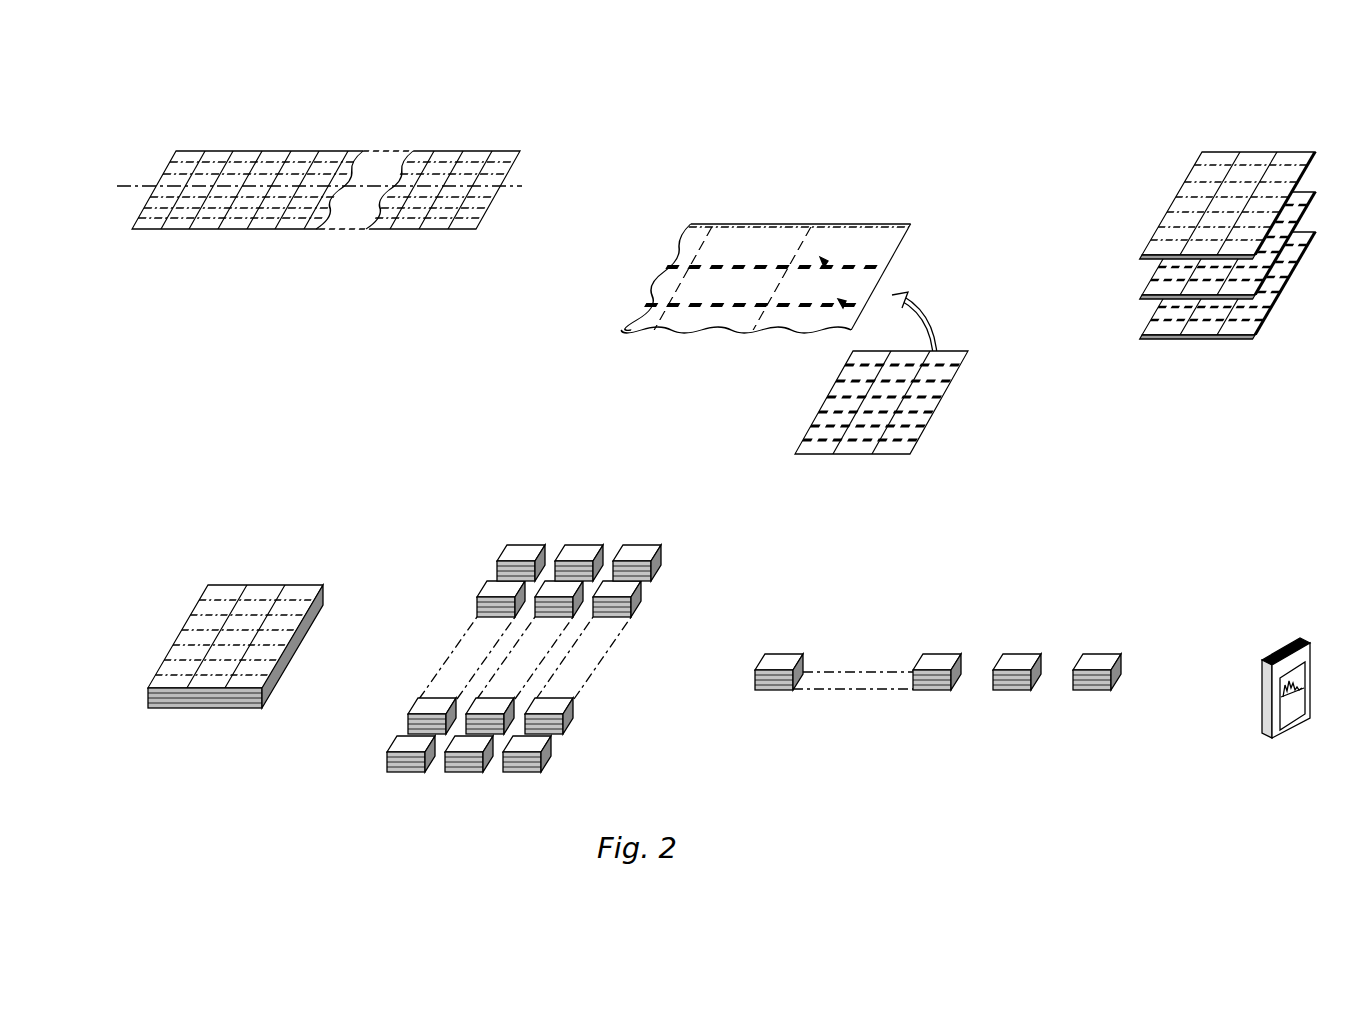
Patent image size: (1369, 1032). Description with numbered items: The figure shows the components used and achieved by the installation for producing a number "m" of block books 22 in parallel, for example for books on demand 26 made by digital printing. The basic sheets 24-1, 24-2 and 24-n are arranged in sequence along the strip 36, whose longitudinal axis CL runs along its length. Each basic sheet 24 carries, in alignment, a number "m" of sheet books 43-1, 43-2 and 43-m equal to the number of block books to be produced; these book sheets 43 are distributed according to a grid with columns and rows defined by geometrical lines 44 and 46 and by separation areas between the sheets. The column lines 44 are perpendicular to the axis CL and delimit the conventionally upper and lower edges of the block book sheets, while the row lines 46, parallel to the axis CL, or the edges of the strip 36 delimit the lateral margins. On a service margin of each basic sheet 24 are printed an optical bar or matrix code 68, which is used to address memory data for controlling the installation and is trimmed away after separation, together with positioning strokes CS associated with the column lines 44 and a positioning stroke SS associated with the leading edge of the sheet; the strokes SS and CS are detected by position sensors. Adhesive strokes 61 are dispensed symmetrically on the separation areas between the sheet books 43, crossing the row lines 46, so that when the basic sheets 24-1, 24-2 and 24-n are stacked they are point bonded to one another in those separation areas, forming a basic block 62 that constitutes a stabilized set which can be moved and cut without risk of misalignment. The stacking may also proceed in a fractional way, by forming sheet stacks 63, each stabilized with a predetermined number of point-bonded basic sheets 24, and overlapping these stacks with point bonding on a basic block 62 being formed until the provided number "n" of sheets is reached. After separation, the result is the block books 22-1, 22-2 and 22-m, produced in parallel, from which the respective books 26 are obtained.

The block book 22 is at (1297, 640).
The first block book 22-1 is at (402, 780).
The second block book 22-2 is at (407, 703).
The m-th block book 22-m is at (653, 541).
The basic sheet 24 is at (972, 426).
The first basic sheet 24-1 is at (200, 136).
The second basic sheet 24-2 is at (290, 135).
The n-th basic sheet 24-n is at (477, 140).
The book on demand 26 is at (1268, 638).
The strip 36 is at (340, 233).
The sheet book 43 is at (662, 330).
The first sheet book 43-1 is at (798, 447).
The second sheet book 43-2 is at (810, 433).
The m-th sheet book 43-m is at (950, 355).
The column line 44 is at (182, 222).
The row line 46 is at (158, 209).
The adhesive stroke 61 is at (840, 303).
The basic block 62 is at (178, 584).
The sheet stack 63 is at (1123, 203).
The matrix code 68 is at (895, 223).
The longitudinal axis CL is at (518, 186).
The positioning stroke CS is at (812, 223).
The positioning stroke SS is at (912, 224).